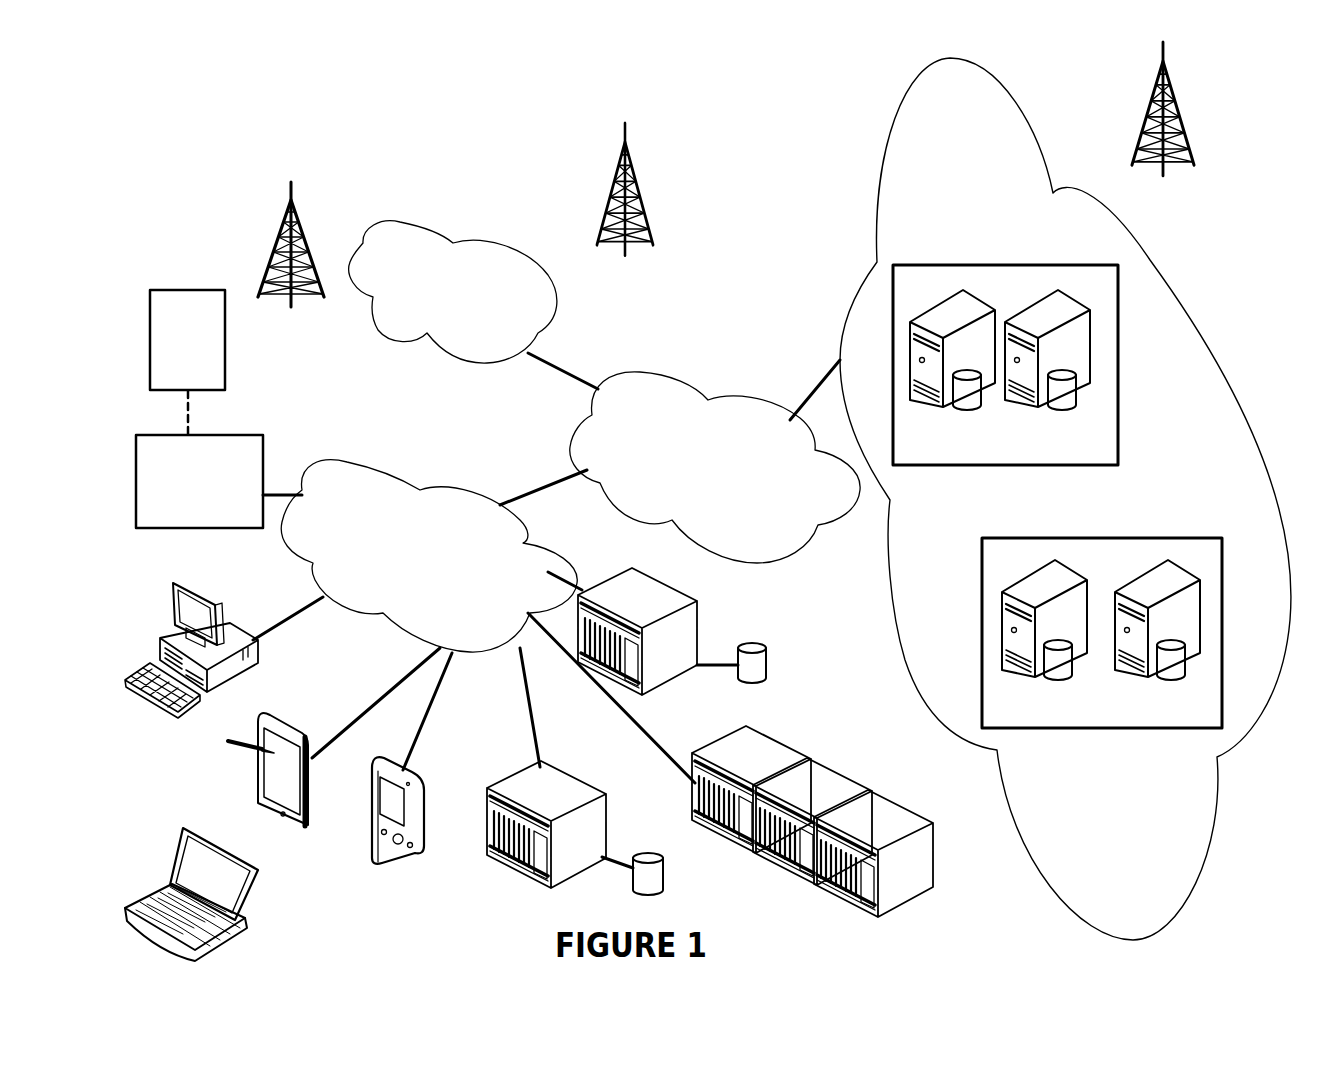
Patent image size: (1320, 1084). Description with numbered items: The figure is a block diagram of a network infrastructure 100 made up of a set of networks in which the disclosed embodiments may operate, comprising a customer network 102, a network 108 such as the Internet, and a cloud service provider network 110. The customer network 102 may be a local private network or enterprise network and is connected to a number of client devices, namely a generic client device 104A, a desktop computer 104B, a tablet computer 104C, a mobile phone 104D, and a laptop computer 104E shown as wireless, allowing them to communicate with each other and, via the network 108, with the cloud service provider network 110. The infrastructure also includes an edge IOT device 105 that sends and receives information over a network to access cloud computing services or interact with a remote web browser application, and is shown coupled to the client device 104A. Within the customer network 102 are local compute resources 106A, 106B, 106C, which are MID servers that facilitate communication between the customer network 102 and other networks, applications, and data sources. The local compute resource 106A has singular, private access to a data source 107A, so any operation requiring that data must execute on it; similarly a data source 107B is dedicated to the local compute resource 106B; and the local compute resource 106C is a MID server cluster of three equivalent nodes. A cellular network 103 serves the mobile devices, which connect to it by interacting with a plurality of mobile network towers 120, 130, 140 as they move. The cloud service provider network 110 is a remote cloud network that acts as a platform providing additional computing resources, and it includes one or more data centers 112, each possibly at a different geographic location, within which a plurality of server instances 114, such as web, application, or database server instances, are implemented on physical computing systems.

The network infrastructure 100 is at (366, 151).
The customer network 102 is at (390, 468).
The cellular network 103 is at (472, 245).
The client device 104A is at (226, 435).
The desktop computer 104B is at (202, 593).
The tablet computer 104C is at (280, 715).
The mobile phone 104D is at (420, 777).
The laptop computer 104E is at (255, 875).
The edge IOT device 105 is at (165, 290).
The local compute resource 106A is at (548, 790).
The local compute resource 106B is at (697, 620).
The local compute resource 106C is at (768, 740).
The data source 107A is at (660, 882).
The data source 107B is at (766, 656).
The network 108 is at (640, 368).
The cloud service provider network 110 is at (1162, 266).
The data center 112 is at (935, 265).
The server instance 114 is at (960, 409).
The mobile network tower 120 is at (625, 204).
The mobile network tower 130 is at (291, 262).
The mobile network tower 140 is at (1163, 122).